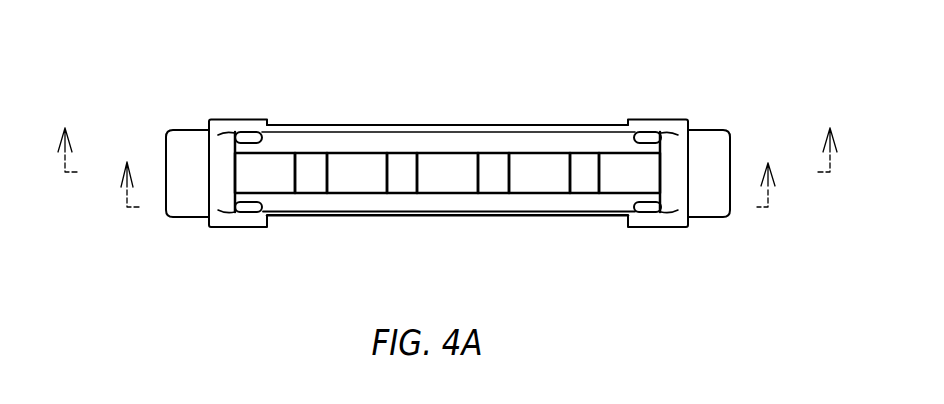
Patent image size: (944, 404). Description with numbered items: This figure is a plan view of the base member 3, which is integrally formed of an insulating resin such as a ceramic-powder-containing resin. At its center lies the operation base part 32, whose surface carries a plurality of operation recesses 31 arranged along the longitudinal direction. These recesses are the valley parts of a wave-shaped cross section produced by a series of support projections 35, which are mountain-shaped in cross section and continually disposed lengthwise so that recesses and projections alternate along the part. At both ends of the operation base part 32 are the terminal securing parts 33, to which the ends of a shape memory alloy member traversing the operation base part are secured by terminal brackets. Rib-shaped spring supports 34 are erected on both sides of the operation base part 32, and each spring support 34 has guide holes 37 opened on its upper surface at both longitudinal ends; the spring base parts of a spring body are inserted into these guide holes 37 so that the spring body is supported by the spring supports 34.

The base member 3 is at (447, 161).
The operation recess 31 is at (452, 165).
The operation base part 32 is at (556, 153).
The terminal securing part 33 is at (173, 162).
The spring support 34 is at (297, 130).
The support projection 35 is at (312, 162).
The guide hole 37 is at (242, 137).